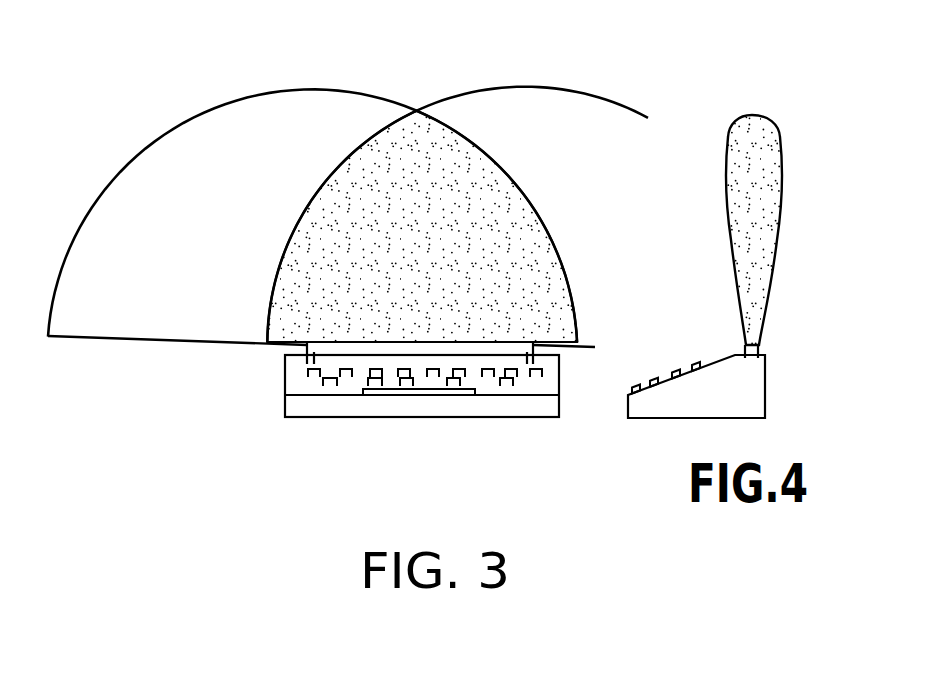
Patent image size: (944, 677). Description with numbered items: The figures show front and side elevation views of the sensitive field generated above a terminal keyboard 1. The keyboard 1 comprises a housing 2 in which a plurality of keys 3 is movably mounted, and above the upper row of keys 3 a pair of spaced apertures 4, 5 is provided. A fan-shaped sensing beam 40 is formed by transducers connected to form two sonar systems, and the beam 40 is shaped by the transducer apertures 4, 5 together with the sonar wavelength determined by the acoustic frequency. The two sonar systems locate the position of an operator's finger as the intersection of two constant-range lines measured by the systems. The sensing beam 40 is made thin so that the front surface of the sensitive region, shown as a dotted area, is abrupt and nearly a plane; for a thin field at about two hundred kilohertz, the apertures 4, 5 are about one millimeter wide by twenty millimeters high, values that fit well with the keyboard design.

In FIG. 3, the terminal keyboard 1 is at (390, 422).
In FIG. 4, the terminal keyboard 1 is at (714, 388).
In FIG. 3, the housing 2 is at (390, 395).
In FIG. 4, the housing 2 is at (750, 392).
In FIG. 3, the keys 3 is at (426, 415).
In FIG. 4, the keys 3 is at (666, 350).
In FIG. 3, the aperture 4 is at (302, 358).
In FIG. 3, the aperture 5 is at (540, 360).
In FIG. 4, the aperture 5 is at (782, 329).
In FIG. 3, the fan-shaped sensing beam 40 is at (348, 183).
In FIG. 4, the fan-shaped sensing beam 40 is at (779, 207).